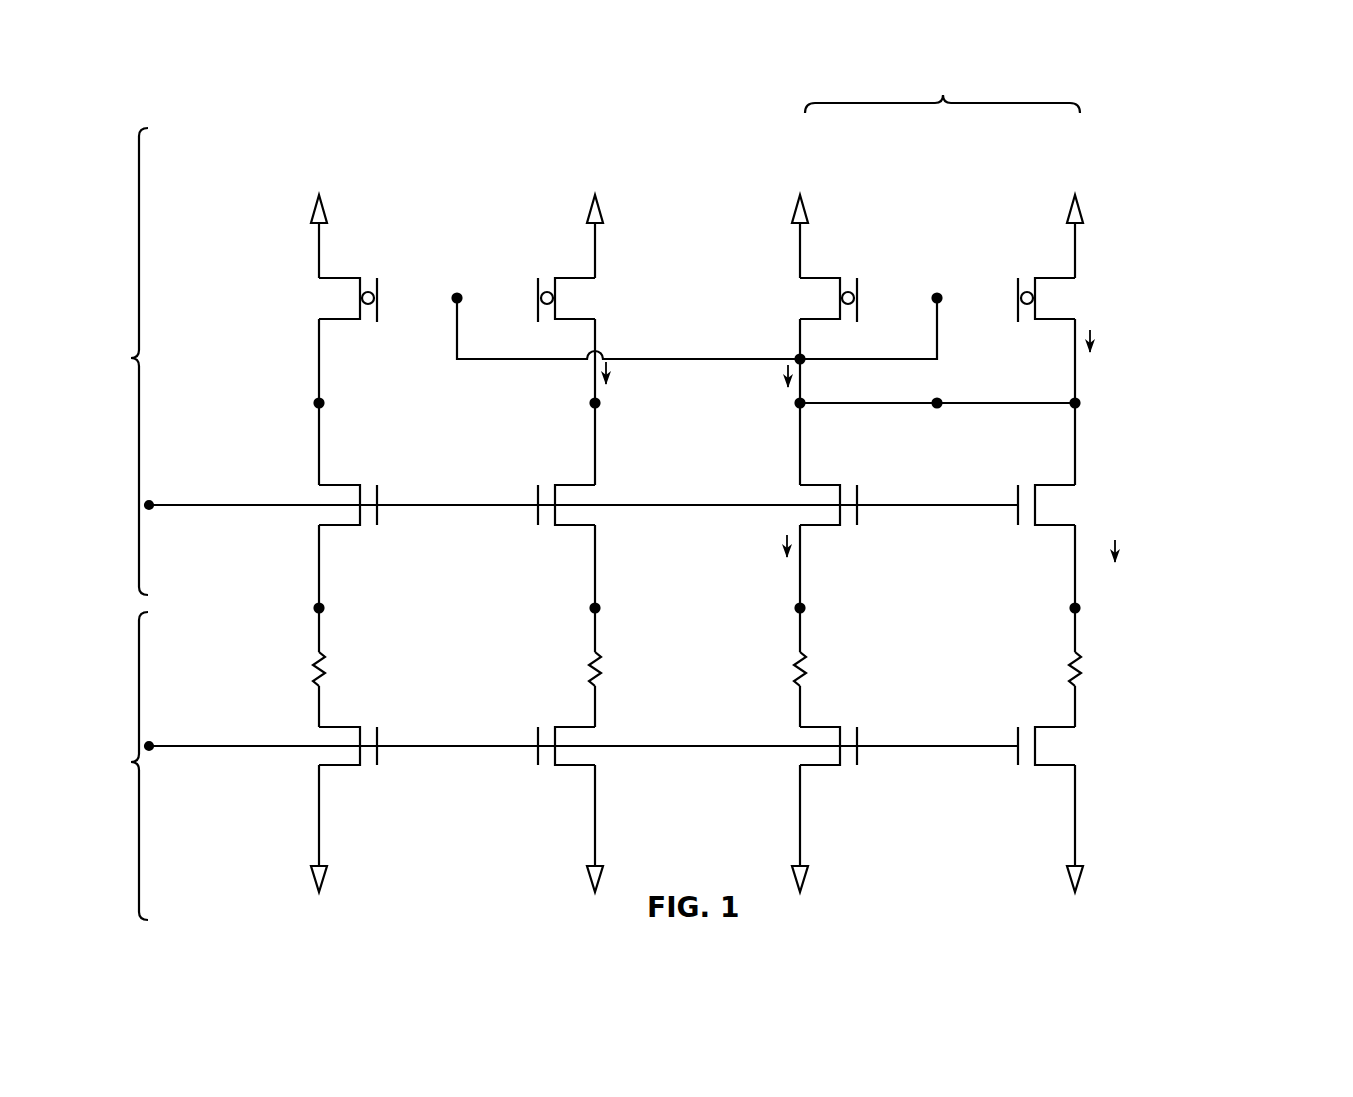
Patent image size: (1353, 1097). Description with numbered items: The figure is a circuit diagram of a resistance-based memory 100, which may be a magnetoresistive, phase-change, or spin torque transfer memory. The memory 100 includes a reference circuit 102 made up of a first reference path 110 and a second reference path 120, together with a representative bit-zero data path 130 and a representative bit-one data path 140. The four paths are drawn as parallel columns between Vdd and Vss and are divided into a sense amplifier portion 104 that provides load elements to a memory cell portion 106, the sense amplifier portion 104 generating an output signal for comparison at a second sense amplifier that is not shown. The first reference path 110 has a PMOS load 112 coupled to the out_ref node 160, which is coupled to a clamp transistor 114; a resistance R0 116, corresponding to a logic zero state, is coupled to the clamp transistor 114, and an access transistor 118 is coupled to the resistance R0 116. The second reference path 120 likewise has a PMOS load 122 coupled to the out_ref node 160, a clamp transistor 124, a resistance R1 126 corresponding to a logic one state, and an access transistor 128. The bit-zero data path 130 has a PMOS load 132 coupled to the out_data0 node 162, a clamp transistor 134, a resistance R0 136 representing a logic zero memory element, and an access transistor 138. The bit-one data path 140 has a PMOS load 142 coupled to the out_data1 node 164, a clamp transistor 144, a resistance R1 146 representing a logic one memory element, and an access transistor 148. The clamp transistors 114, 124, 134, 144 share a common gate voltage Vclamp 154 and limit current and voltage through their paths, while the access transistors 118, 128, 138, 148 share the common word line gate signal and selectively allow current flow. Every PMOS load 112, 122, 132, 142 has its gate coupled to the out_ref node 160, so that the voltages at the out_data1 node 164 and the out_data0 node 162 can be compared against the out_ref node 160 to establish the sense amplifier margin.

The resistance-based memory 100 is at (1270, 133).
The reference circuit 102 is at (942, 90).
The sense amplifier portion 104 is at (115, 361).
The memory cell portion 106 is at (115, 766).
The first reference path 110 is at (1093, 157).
The PMOS load 112 is at (1079, 297).
The clamp transistor 114 is at (1079, 503).
The resistance R0 116 is at (1080, 650).
The access transistor 118 is at (1079, 740).
The second reference path 120 is at (819, 159).
The PMOS load 122 is at (798, 298).
The clamp transistor 124 is at (796, 493).
The resistance R1 126 is at (798, 654).
The access transistor 128 is at (796, 734).
The bit-zero data path 130 is at (614, 157).
The PMOS load 132 is at (599, 298).
The clamp transistor 134 is at (599, 493).
The resistance R0 136 is at (600, 651).
The access transistor 138 is at (599, 734).
The bit-one data path 140 is at (339, 157).
The PMOS load 142 is at (303, 297).
The clamp transistor 144 is at (329, 534).
The resistance R1 146 is at (313, 654).
The access transistor 148 is at (336, 784).
The Vclamp 154 is at (207, 561).
The out_ref node 160 is at (939, 400).
The out_data0 node 162 is at (593, 407).
The out_data1 node 164 is at (316, 406).